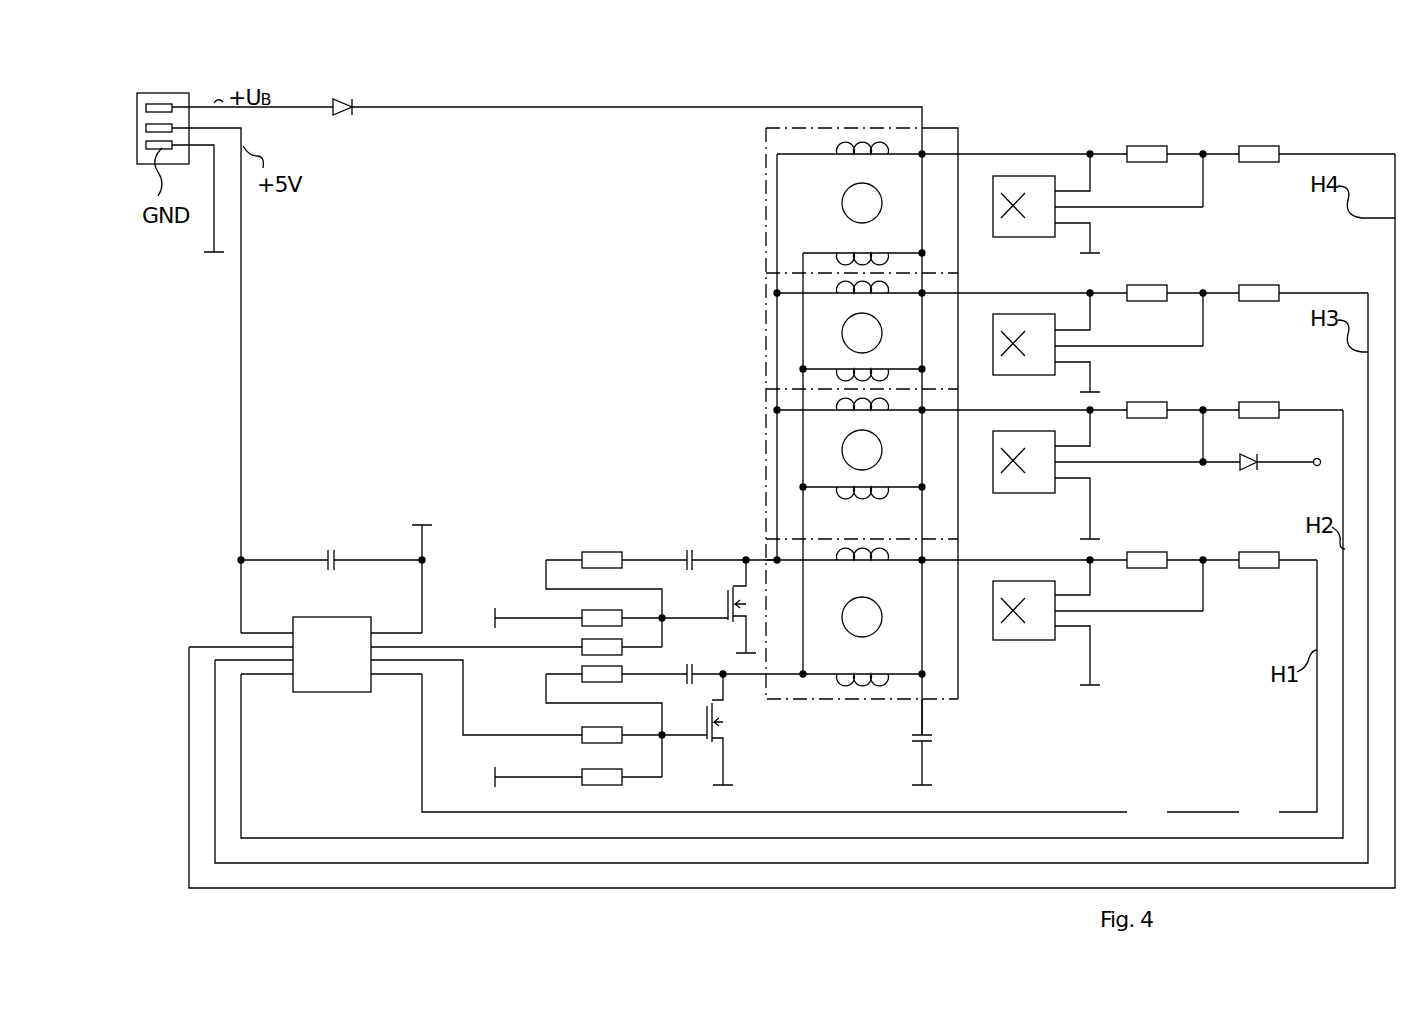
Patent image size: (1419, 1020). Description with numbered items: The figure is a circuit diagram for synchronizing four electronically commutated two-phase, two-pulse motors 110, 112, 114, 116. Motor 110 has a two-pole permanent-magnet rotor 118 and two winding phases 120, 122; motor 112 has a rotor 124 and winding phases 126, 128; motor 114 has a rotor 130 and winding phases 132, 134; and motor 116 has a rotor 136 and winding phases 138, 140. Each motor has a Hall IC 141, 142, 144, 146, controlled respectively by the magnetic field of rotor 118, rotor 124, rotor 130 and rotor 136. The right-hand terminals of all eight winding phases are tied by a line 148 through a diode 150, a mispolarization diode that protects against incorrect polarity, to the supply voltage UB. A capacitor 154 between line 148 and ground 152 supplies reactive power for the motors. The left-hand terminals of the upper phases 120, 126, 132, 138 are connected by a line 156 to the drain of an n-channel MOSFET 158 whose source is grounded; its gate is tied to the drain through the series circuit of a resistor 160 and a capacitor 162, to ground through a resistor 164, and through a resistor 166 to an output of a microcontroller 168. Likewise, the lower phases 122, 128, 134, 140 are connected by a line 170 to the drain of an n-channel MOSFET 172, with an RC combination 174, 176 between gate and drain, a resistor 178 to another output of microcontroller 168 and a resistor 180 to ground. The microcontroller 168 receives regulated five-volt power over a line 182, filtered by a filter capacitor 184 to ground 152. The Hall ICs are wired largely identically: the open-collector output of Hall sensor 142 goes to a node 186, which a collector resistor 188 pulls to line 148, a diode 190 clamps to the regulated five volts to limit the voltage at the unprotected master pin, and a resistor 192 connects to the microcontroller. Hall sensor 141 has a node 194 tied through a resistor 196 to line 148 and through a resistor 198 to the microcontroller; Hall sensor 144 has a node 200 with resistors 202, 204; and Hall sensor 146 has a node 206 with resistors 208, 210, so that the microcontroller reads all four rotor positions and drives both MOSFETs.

The electronically commutated motor 110 is at (766, 558).
The electronically commutated motor 112 is at (766, 415).
The electronically commutated motor 114 is at (766, 297).
The electronically commutated motor 116 is at (766, 200).
The permanent-magnet rotor 118 is at (878, 640).
The winding phase 120 is at (856, 568).
The winding phase 122 is at (856, 665).
The rotor 124 is at (878, 459).
The winding phase 126 is at (854, 422).
The winding phase 128 is at (856, 498).
The rotor 130 is at (878, 342).
The winding phase 132 is at (854, 301).
The winding phase 134 is at (857, 364).
The rotor 136 is at (878, 219).
The winding phase 138 is at (854, 163).
The winding phase 140 is at (857, 241).
The Hall IC 141 is at (1006, 630).
The Hall IC 142 is at (1006, 483).
The Hall IC 144 is at (1006, 364).
The Hall IC 146 is at (1006, 226).
The line 148 is at (923, 115).
The diode 150 is at (343, 115).
The ground 152 is at (210, 242).
The capacitor 154 is at (928, 735).
The line 156 is at (777, 234).
The n-channel MOSFET 158 is at (728, 600).
The resistor 160 is at (561, 566).
The capacitor 162 is at (677, 549).
The resistor 164 is at (561, 620).
The resistor 166 is at (561, 654).
The microcontroller 168 is at (331, 692).
The line 170 is at (803, 353).
The n-channel MOSFET 172 is at (726, 692).
The resistor 174 is at (561, 681).
The capacitor 176 is at (683, 676).
The resistor 178 is at (561, 741).
The resistor 180 is at (574, 789).
The line 182 is at (241, 488).
The filter capacitor 184 is at (333, 550).
The node 186 is at (1204, 406).
The collector resistor 188 is at (1147, 403).
The diode 190 is at (1253, 450).
The resistor 192 is at (1272, 406).
The node 194 is at (1204, 556).
The resistor 196 is at (1147, 553).
The resistor 198 is at (1260, 568).
The node 200 is at (1204, 289).
The resistor 202 is at (1147, 286).
The resistor 204 is at (1272, 289).
The node 206 is at (1204, 150).
The resistor 208 is at (1147, 147).
The resistor 210 is at (1272, 150).